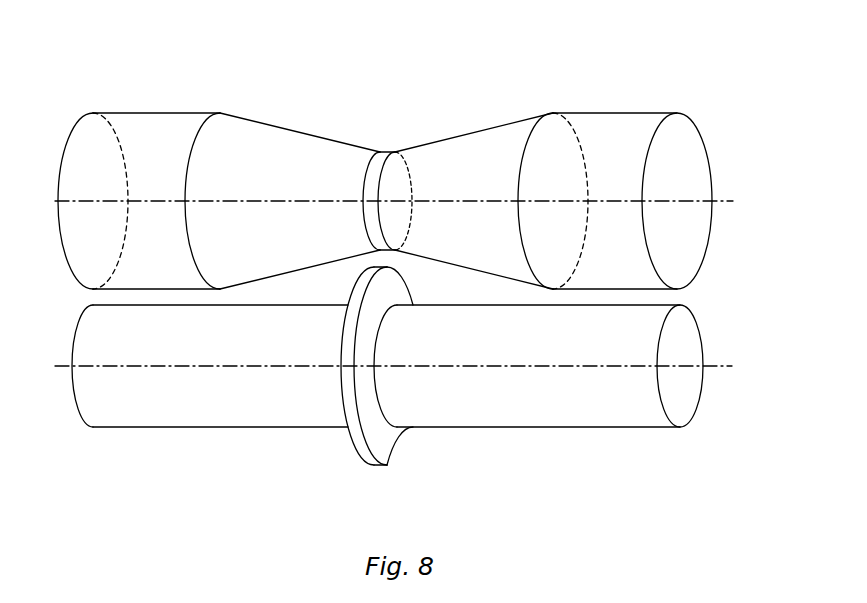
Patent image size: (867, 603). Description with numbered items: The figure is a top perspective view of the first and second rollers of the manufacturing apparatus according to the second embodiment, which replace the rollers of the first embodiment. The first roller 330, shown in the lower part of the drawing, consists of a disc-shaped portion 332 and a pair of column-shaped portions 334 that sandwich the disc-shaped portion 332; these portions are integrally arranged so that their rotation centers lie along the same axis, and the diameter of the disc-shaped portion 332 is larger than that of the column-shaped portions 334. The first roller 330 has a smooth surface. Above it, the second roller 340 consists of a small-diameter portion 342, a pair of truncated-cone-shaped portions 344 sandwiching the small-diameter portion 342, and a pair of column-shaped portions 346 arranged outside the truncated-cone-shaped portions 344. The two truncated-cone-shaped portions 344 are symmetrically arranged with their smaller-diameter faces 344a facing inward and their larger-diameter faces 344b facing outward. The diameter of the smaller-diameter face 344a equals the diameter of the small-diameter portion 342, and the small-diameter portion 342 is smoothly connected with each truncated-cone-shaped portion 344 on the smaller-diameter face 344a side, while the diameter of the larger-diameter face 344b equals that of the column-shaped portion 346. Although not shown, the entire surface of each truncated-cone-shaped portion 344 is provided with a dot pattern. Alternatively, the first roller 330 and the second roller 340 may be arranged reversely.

The first roller 330 is at (387, 406).
The disc-shaped portion 332 is at (380, 463).
The column-shaped portions 334 is at (202, 415).
The second roller 340 is at (385, 151).
The small-diameter portion 342 is at (382, 148).
The truncated-cone-shaped portions 344 is at (260, 140).
The smaller-diameter face 344a is at (398, 184).
The larger-diameter face 344b is at (560, 128).
The column-shaped portions 346 is at (153, 128).